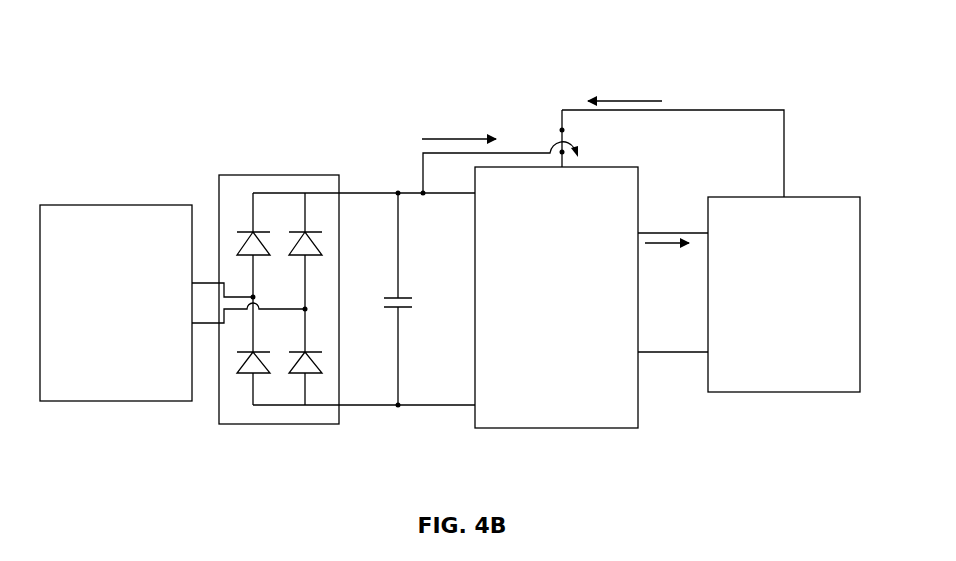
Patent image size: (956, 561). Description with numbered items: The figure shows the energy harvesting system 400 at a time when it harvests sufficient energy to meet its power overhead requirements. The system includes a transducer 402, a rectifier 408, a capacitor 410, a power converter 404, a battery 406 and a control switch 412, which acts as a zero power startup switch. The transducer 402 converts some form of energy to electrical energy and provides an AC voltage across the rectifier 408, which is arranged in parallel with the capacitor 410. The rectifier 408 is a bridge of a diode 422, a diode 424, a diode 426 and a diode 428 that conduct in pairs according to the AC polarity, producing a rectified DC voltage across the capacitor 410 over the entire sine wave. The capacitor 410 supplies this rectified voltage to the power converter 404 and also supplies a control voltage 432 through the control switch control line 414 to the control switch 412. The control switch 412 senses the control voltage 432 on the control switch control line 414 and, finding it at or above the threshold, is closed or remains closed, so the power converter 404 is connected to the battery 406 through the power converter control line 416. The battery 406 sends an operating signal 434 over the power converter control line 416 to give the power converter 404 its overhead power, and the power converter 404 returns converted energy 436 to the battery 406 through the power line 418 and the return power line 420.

The energy harvesting system 400 is at (168, 78).
The transducer 402 is at (102, 205).
The power converter 404 is at (606, 167).
The battery 406 is at (799, 197).
The rectifier 408 is at (326, 300).
The capacitor 410 is at (393, 308).
The control switch 412 is at (556, 125).
The control switch control line 414 is at (440, 152).
The power converter control line 416 is at (681, 110).
The power line 418 is at (665, 233).
The return power line 420 is at (667, 353).
The diode 422 is at (237, 243).
The diode 424 is at (318, 367).
The diode 426 is at (318, 250).
The diode 428 is at (238, 367).
The control voltage VC 432 is at (462, 139).
The operating signal 434 is at (614, 101).
The converted energy 436 is at (684, 246).